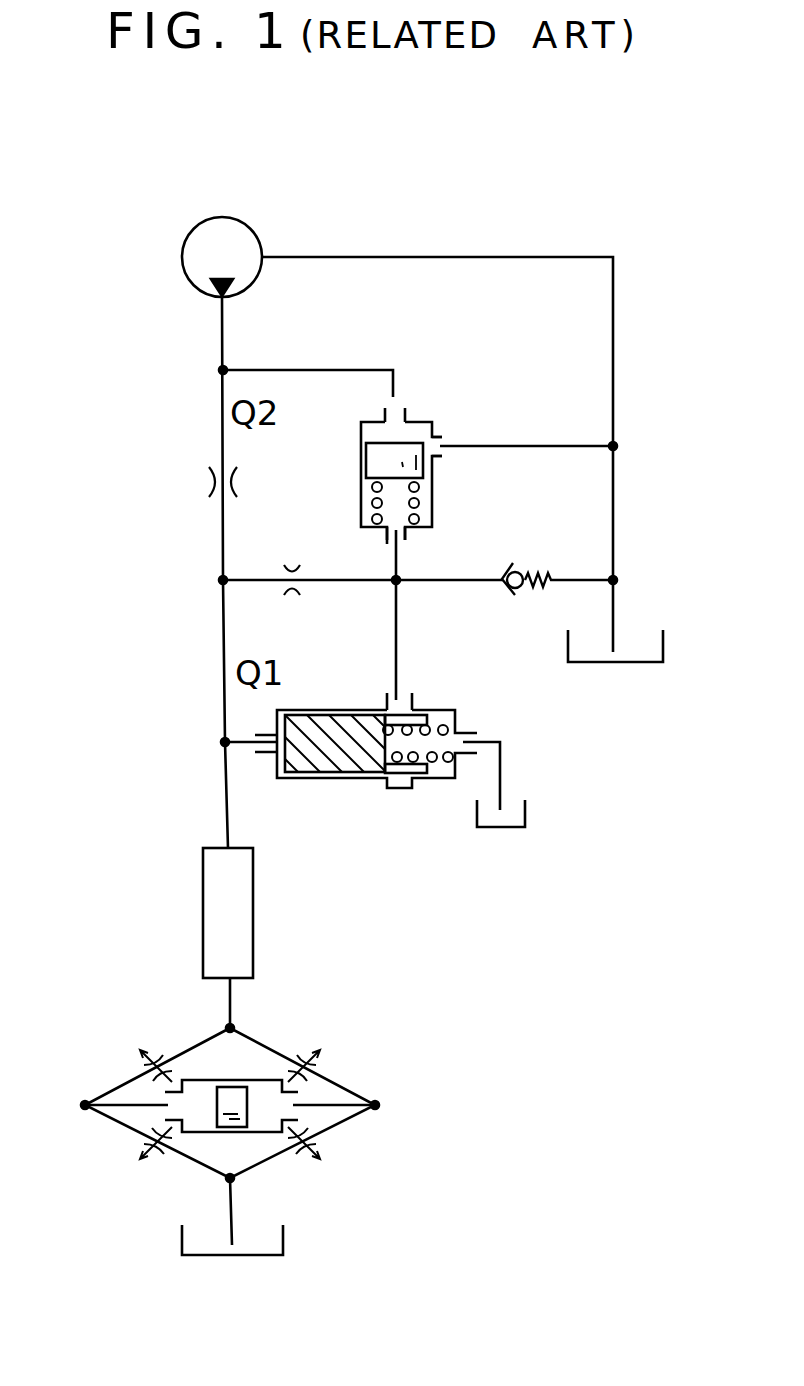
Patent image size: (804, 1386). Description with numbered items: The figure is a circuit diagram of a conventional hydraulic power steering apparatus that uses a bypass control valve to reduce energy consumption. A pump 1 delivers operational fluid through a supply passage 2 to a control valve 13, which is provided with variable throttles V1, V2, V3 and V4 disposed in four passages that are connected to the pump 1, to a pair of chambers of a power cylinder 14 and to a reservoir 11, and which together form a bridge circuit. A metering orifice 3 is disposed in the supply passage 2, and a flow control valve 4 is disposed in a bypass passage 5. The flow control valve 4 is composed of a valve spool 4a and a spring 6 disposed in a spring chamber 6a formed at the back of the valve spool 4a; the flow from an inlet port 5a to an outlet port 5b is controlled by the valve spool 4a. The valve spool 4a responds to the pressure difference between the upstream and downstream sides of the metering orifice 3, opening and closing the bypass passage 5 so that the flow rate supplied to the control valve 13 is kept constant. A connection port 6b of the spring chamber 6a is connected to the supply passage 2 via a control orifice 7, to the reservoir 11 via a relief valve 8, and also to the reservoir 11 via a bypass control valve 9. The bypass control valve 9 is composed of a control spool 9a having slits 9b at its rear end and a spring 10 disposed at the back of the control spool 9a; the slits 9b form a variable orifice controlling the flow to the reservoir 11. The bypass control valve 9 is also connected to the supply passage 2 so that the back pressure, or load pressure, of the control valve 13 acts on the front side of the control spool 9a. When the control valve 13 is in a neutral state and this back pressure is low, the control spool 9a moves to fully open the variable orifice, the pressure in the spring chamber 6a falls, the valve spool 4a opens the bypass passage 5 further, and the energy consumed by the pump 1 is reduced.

The pump 1 is at (245, 215).
The supply passage 2 is at (222, 555).
The metering orifice 3 is at (200, 482).
The flow control valve 4 is at (360, 443).
The valve spool 4a is at (380, 465).
The bypass passage 5 is at (578, 446).
The inlet port 5a is at (400, 403).
The outlet port 5b is at (445, 440).
The spring 6 is at (420, 500).
The spring chamber 6a is at (397, 507).
The connection port 6b is at (390, 535).
The control orifice 7 is at (297, 592).
The relief valve 8 is at (545, 568).
The bypass control valve 9 is at (333, 780).
The control spool 9a is at (335, 735).
The slits 9b is at (408, 715).
The spring 10 is at (440, 760).
The reservoir 11 is at (665, 650).
The control valve 13 is at (259, 1126).
The power cylinder 14 is at (240, 1152).
The variable throttle V1 is at (146, 1045).
The variable throttle V2 is at (316, 1045).
The variable throttle V3 is at (144, 1169).
The variable throttle V4 is at (321, 1169).